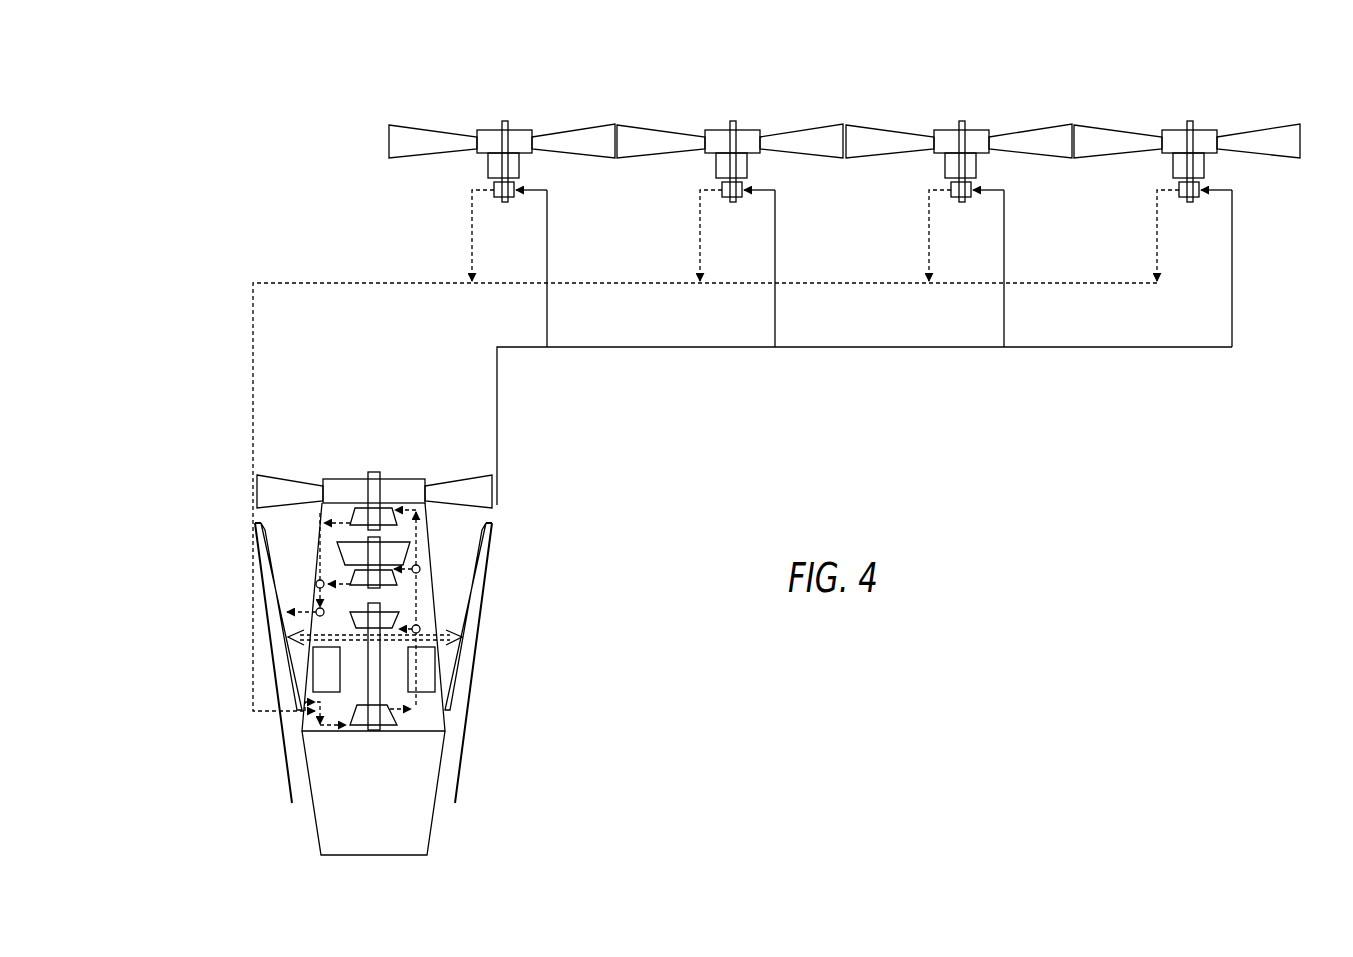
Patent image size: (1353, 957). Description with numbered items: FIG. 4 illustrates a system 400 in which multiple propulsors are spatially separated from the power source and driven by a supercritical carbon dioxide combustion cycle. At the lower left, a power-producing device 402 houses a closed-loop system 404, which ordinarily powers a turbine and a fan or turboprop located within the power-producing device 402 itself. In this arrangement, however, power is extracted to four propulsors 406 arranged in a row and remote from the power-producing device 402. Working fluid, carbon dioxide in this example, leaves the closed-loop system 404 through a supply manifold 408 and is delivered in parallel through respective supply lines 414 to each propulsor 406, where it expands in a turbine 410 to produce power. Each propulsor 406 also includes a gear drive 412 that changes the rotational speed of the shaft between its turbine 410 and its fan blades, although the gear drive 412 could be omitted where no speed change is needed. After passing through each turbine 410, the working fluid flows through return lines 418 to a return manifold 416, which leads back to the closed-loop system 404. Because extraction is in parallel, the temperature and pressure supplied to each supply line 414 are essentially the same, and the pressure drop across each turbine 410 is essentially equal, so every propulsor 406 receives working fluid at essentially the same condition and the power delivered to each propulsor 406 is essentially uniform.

The system 400 is at (1136, 541).
The power-producing device 402 is at (504, 768).
The closed-loop system 404 is at (437, 560).
The propulsor 406 is at (568, 110).
The supply manifold 408 is at (918, 348).
The turbine 410 is at (494, 185).
The gear drive 412 is at (488, 166).
The supply line 414 is at (547, 307).
The return manifold 416 is at (253, 315).
The return line 418 is at (472, 232).